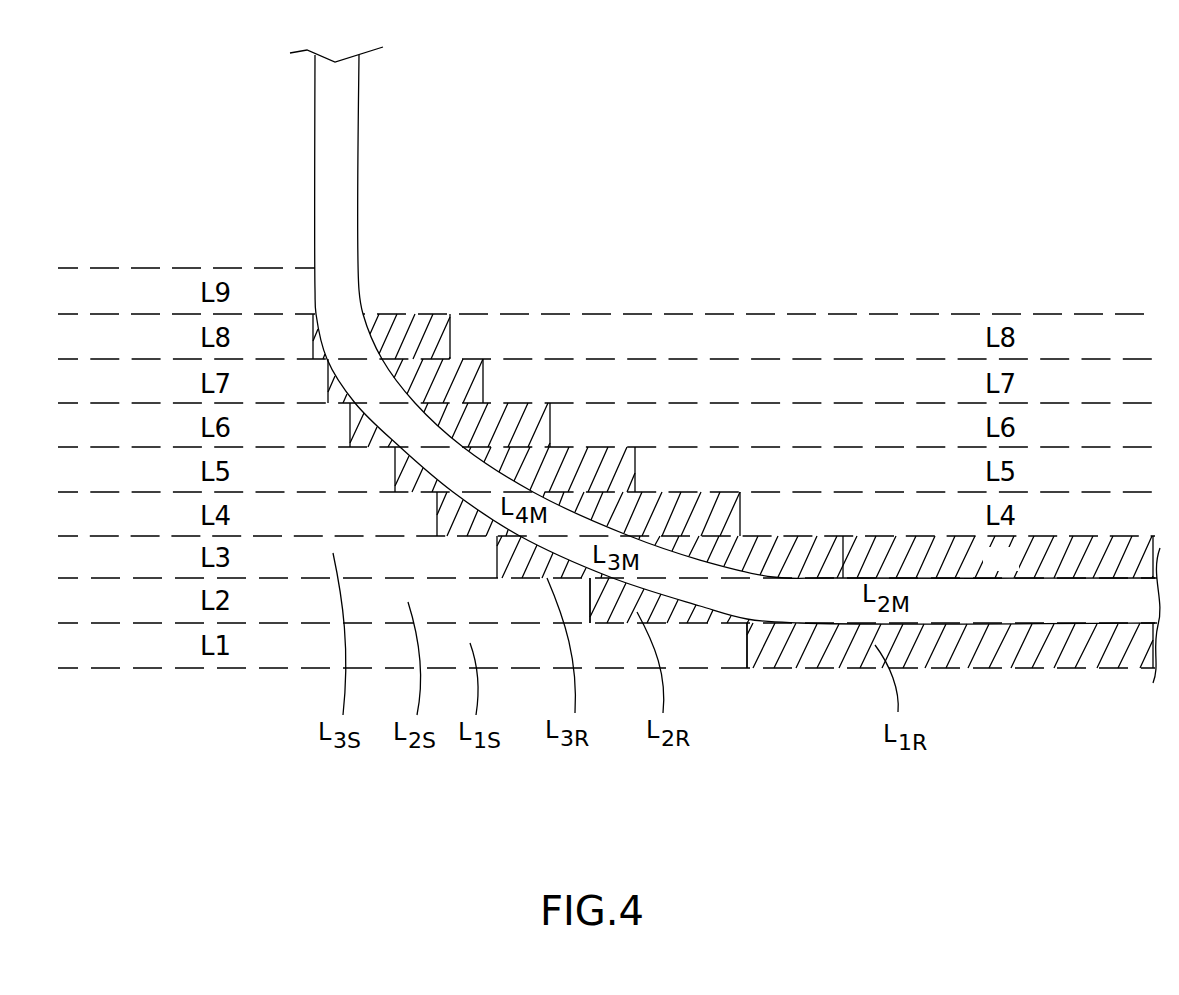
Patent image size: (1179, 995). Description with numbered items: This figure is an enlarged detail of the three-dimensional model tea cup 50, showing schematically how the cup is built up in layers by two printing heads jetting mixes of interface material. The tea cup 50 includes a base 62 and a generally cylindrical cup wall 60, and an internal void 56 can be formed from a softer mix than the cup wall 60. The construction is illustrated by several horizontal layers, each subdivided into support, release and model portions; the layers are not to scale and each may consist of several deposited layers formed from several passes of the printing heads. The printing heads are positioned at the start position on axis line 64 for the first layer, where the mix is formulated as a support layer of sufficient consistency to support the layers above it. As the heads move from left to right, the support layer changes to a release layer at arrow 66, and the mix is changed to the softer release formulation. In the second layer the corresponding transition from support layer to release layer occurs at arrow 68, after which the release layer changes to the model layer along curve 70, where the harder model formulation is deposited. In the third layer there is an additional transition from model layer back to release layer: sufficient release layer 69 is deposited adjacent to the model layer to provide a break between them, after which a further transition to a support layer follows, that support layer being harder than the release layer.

The tea cup 50 is at (485, 133).
The internal void 56 is at (803, 190).
The cup wall 60 is at (314, 152).
The base 62 is at (1023, 602).
The axis line 64 is at (265, 693).
The arrow 66 is at (748, 676).
The arrow 68 is at (590, 623).
The release layer 69 is at (825, 578).
The curve 70 is at (695, 612).